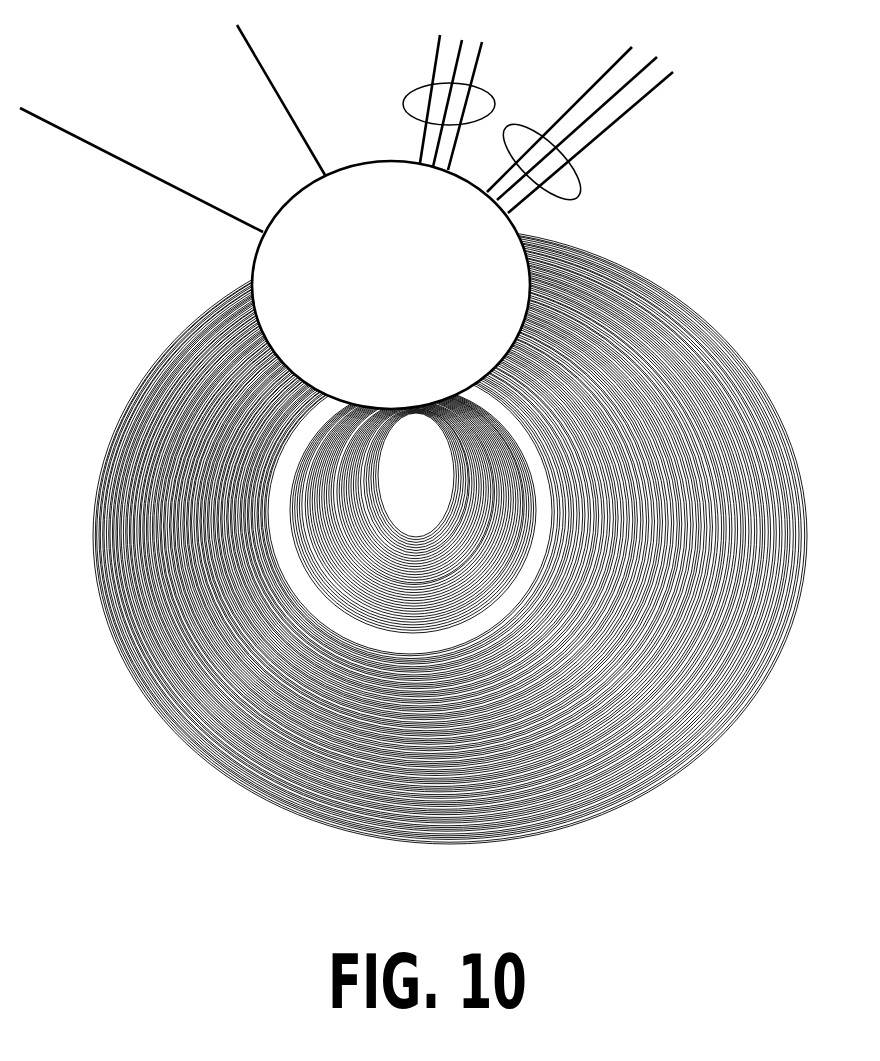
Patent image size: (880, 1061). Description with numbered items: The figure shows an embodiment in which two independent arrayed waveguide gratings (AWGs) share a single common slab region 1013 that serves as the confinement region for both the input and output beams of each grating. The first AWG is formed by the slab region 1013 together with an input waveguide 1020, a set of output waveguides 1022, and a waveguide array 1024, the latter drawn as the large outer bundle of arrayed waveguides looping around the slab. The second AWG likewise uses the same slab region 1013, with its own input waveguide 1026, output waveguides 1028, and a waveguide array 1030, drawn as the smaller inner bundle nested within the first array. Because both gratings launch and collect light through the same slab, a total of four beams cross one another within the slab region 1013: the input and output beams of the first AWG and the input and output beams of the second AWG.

The slab region 1013 is at (409, 288).
The input waveguide 1020 is at (141, 170).
The output waveguides 1022 is at (580, 137).
The waveguide array 1024 is at (467, 536).
The input waveguide 1026 is at (281, 100).
The output waveguides 1028 is at (432, 102).
The waveguide array 1030 is at (413, 510).